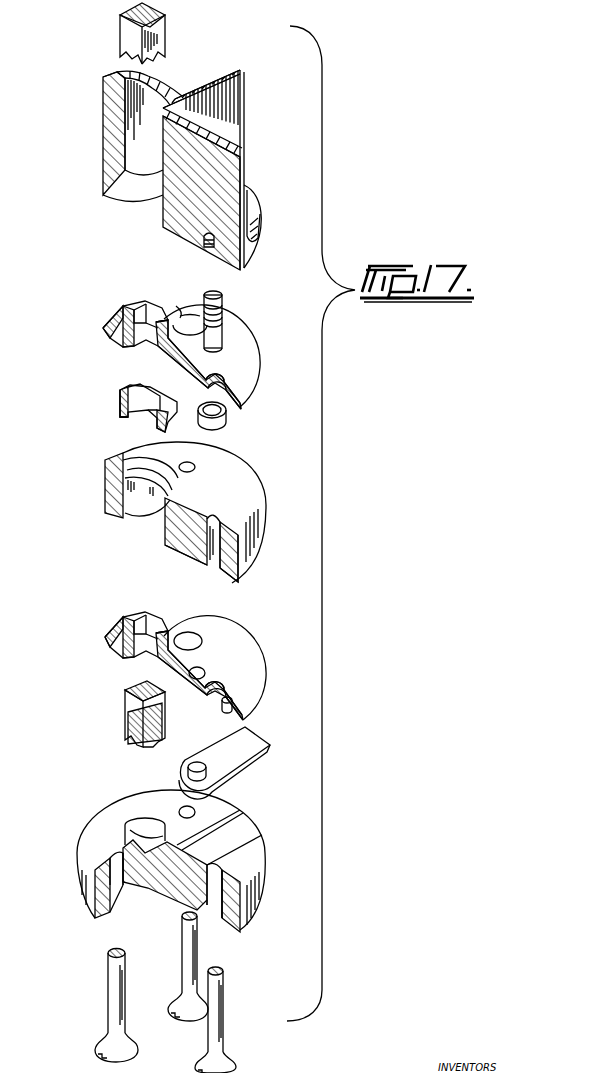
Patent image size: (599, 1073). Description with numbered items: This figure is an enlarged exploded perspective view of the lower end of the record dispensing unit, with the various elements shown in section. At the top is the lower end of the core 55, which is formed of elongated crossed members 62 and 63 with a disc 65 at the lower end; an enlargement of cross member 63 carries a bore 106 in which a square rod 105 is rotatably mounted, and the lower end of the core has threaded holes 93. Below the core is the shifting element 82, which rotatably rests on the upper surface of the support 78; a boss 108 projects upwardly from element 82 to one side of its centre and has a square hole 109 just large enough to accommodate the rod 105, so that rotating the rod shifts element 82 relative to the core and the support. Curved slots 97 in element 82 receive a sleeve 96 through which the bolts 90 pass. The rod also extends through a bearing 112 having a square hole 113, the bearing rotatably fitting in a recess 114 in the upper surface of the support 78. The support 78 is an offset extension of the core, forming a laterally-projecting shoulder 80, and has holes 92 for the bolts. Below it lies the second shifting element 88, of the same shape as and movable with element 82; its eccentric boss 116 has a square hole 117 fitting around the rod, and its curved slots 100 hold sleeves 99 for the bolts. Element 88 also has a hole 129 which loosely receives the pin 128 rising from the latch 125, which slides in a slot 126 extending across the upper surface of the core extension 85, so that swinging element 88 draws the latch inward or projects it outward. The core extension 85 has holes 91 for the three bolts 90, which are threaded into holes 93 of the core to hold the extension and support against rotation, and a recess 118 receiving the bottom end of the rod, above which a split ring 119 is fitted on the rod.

The square rod 105 is at (130, 30).
The core 55 is at (240, 118).
The cross member 63 is at (105, 82).
The cross member 62 is at (238, 97).
The bore 106 is at (125, 128).
The disc 65 is at (261, 205).
The holes 93 is at (208, 250).
The shifting element 82 is at (248, 360).
The boss 108 is at (130, 307).
The square hole 109 is at (140, 347).
The bolts 90 is at (216, 335).
The curved slots 97 is at (180, 306).
The square hole 113 is at (137, 384).
The bearing 112 is at (128, 413).
The sleeve 96 is at (224, 420).
The shoulder 80 is at (247, 473).
The recess 114 is at (128, 455).
The holes 92 is at (193, 471).
The support 78 is at (262, 530).
The second shifting element 88 is at (260, 677).
The boss 116 is at (133, 614).
The square hole 117 is at (158, 622).
The curved slots 100 is at (190, 633).
The hole 129 is at (204, 670).
The sleeves 99 is at (214, 684).
The split ring 119 is at (127, 724).
The latch 125 is at (247, 743).
The pin 128 is at (182, 765).
The core extension 85 is at (264, 883).
The recess 118 is at (135, 813).
The slot 126 is at (228, 822).
The holes 91 is at (197, 810).